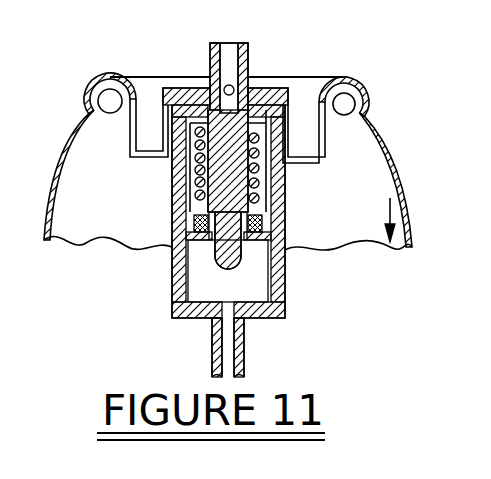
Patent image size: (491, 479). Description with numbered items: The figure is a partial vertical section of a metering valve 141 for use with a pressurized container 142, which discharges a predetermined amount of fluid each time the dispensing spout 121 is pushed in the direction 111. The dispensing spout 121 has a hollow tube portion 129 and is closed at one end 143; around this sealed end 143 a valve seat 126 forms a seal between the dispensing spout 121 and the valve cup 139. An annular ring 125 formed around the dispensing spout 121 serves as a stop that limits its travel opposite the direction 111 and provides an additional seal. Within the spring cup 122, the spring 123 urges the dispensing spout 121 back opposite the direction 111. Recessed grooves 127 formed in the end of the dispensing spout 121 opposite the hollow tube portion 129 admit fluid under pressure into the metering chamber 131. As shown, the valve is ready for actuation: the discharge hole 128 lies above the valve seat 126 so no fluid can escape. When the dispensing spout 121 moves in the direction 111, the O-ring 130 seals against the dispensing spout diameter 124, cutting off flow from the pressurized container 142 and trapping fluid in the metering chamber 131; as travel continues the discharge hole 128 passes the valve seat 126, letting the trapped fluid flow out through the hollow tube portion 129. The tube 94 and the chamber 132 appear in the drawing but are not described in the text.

The tube 94 is at (244, 366).
The direction 111 is at (376, 220).
The dispensing spout 121 is at (212, 63).
The spring cup 122 is at (172, 280).
The spring 123 is at (258, 180).
The dispensing spout diameter 124 is at (215, 183).
The annular ring 125 is at (200, 117).
The valve seat 126 is at (295, 94).
The recessed grooves 127 is at (243, 247).
The discharge hole 128 is at (245, 78).
The hollow tube portion 129 is at (248, 44).
The O-ring 130 is at (258, 228).
The metering chamber 131 is at (268, 200).
The chamber 132 is at (247, 288).
The valve cup 139 is at (113, 74).
The metering valve 141 is at (367, 90).
The pressurized container 142 is at (375, 133).
The closed end 143 is at (170, 138).